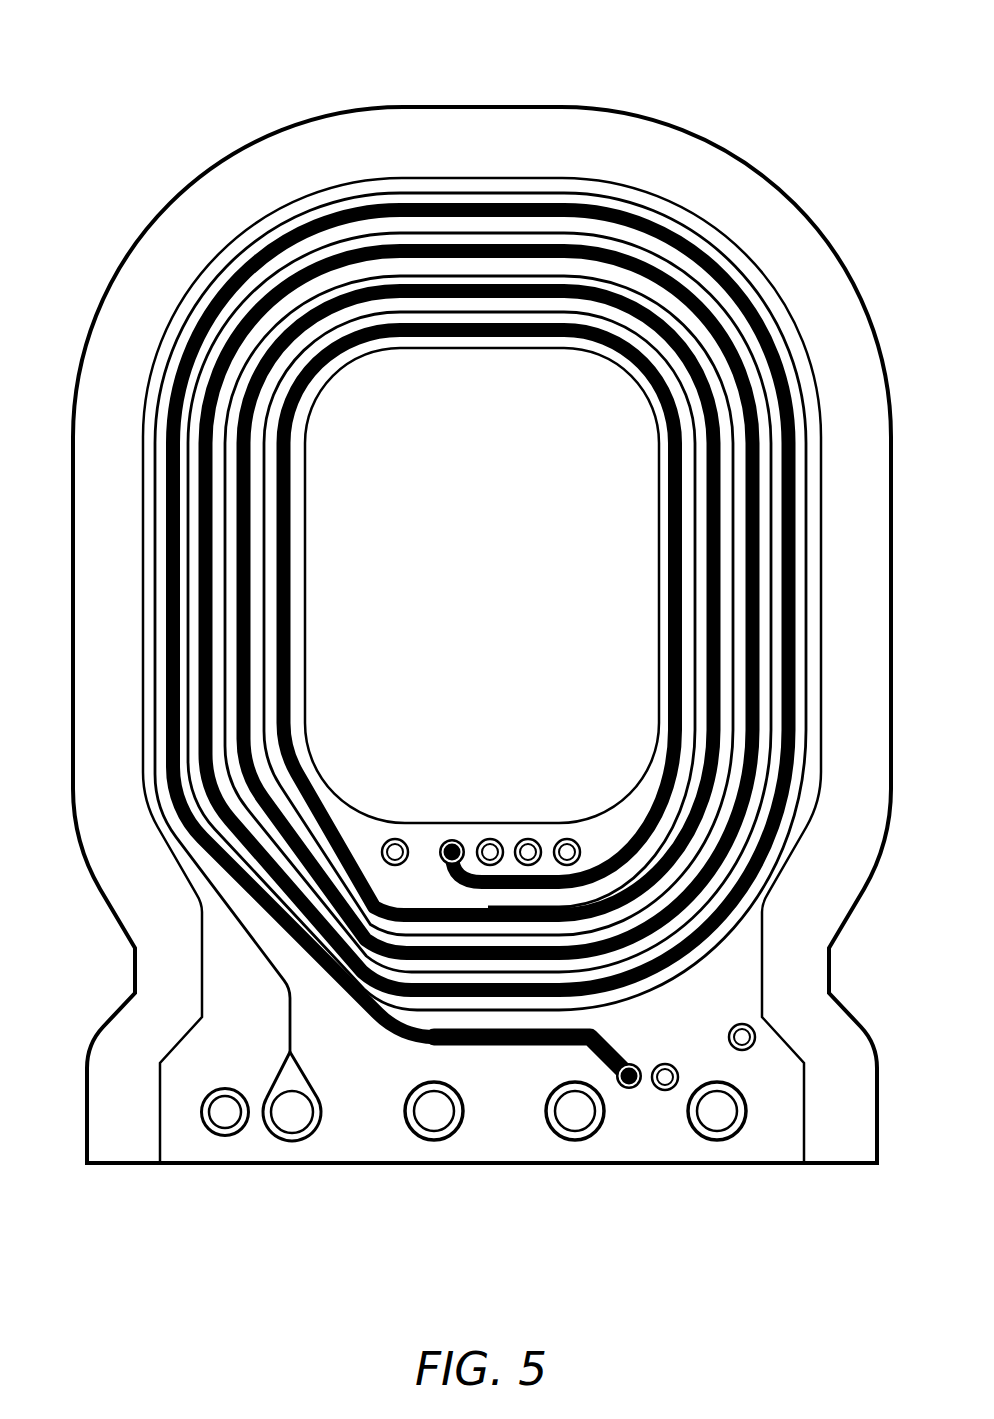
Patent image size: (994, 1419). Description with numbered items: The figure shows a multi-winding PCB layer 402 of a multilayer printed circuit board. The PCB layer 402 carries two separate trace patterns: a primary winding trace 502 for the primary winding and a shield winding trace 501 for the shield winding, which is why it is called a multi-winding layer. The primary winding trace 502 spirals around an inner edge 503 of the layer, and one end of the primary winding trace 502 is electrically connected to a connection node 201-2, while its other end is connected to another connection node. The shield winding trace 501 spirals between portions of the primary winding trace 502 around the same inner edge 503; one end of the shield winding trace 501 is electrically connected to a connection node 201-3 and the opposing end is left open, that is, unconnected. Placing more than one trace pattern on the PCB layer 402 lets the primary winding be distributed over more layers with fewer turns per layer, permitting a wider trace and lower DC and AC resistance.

The PCB layer 402 is at (178, 44).
The shield winding trace 501 is at (695, 553).
The primary winding trace 502 is at (668, 452).
The inner edge 503 is at (312, 568).
The connection node 201-2 is at (452, 838).
The connection node 201-3 is at (289, 1114).